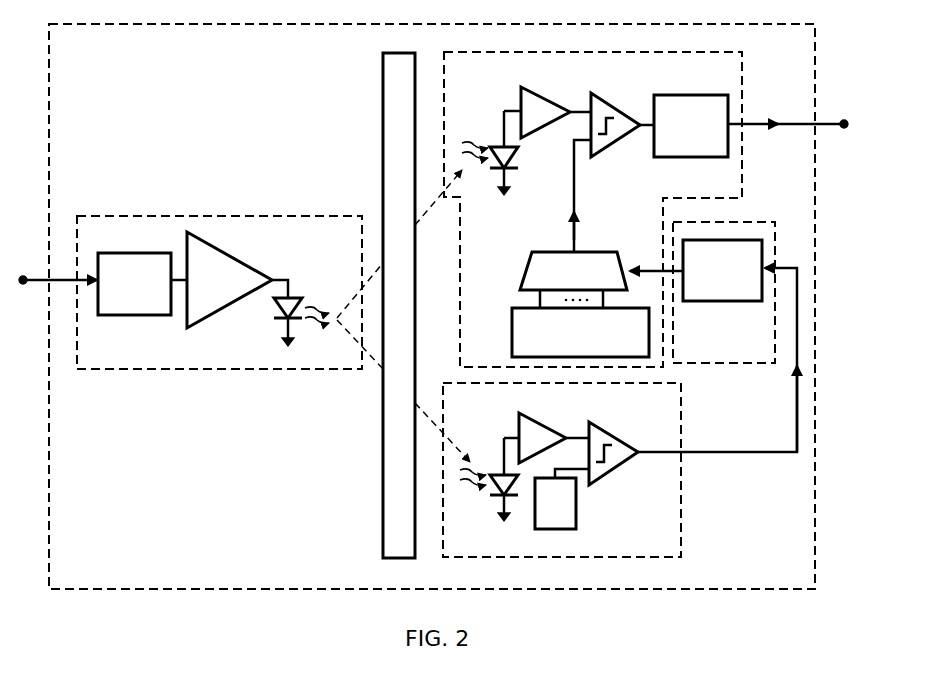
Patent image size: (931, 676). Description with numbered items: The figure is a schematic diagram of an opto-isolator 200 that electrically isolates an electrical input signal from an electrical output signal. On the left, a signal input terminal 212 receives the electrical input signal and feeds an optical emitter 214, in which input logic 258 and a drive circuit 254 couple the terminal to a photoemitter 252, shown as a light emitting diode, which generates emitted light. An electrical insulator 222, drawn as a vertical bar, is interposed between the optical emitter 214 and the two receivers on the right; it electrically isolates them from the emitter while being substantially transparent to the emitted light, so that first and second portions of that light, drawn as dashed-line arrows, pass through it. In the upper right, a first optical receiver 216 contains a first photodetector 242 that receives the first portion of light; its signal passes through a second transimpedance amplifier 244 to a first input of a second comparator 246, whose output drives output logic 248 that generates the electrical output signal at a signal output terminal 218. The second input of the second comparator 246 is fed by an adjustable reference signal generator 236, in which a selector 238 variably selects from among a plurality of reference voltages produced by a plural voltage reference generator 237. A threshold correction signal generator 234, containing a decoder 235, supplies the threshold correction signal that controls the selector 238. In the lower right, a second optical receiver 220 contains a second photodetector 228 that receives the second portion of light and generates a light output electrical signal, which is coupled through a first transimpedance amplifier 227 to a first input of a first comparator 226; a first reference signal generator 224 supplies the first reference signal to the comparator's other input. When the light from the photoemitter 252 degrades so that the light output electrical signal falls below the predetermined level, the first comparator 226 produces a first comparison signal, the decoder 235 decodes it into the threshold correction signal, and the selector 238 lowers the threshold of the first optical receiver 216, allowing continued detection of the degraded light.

The opto-isolator 200 is at (432, 306).
The signal input terminal 212 is at (25, 285).
The optical emitter 214 is at (283, 214).
The input logic 258 is at (133, 252).
The drive circuit 254 is at (215, 248).
The photoemitter 252 is at (294, 297).
The electrical insulator 222 is at (383, 66).
The first optical receiver 216 is at (745, 146).
The first photodetector 242 is at (502, 138).
The second transimpedance amplifier 244 is at (538, 95).
The second comparator 246 is at (604, 100).
The output logic 248 is at (692, 94).
The signal output terminal 218 is at (841, 129).
The adjustable reference signal generator 236 is at (522, 242).
The selector 238 is at (528, 258).
The plural voltage reference generator 237 is at (512, 324).
The threshold correction signal generator 234 is at (712, 367).
The decoder 235 is at (698, 302).
The second optical receiver 220 is at (683, 504).
The second photodetector 228 is at (503, 462).
The first transimpedance amplifier 227 is at (536, 425).
The first comparator 226 is at (600, 430).
The first reference signal generator 224 is at (578, 510).